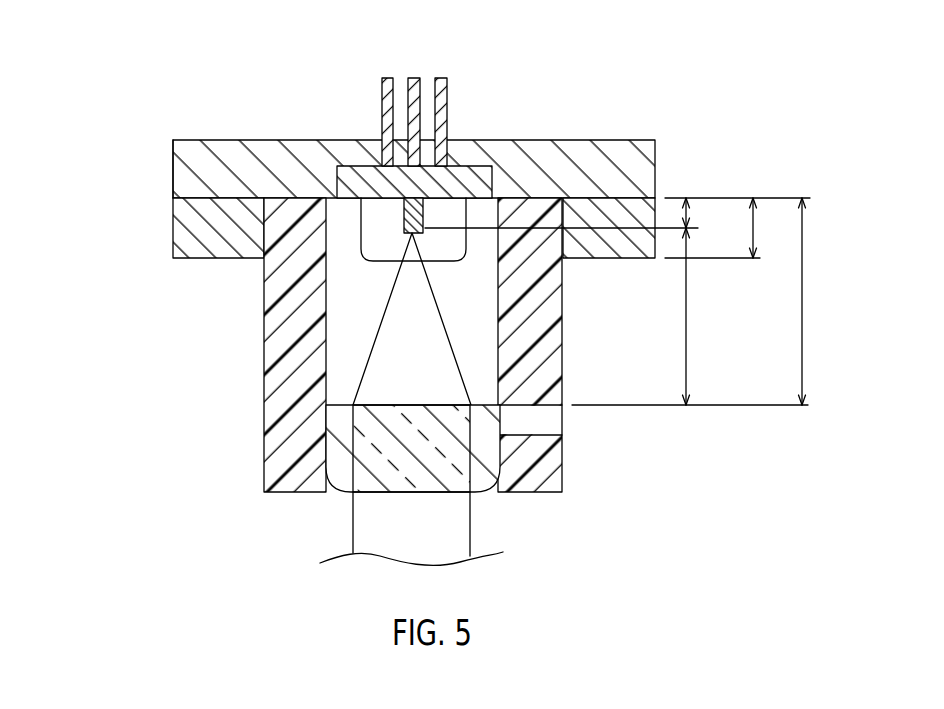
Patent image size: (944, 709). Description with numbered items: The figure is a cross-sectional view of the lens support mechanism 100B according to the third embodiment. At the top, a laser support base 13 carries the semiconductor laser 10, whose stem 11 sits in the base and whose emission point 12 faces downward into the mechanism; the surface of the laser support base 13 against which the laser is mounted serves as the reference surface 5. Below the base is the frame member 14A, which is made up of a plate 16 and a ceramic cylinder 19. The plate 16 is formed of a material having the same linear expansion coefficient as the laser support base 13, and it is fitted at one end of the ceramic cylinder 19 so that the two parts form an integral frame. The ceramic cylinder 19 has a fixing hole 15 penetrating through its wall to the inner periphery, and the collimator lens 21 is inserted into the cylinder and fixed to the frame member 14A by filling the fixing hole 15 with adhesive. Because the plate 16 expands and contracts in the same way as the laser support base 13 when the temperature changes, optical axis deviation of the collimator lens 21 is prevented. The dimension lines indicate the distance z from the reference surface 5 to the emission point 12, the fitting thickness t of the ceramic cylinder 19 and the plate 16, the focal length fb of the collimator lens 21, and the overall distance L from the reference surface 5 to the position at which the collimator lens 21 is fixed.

The lens support mechanism 100B is at (690, 93).
The laser support base 13 is at (230, 147).
The semiconductor laser 10 is at (467, 172).
The reference surface 5 is at (173, 168).
The frame member 14A is at (88, 202).
The plate 16 is at (185, 232).
The ceramic cylinder 19 is at (268, 293).
The fixing hole 15 is at (552, 425).
The stem 11 is at (403, 219).
The emission point 12 is at (413, 233).
The collimator lens 21 is at (337, 460).
The distance from reference surface to emission point z is at (694, 216).
The fitting thickness t is at (758, 230).
The focal length of the collimator lens fb is at (690, 313).
The distance from reference surface to lens fixing position L is at (805, 315).